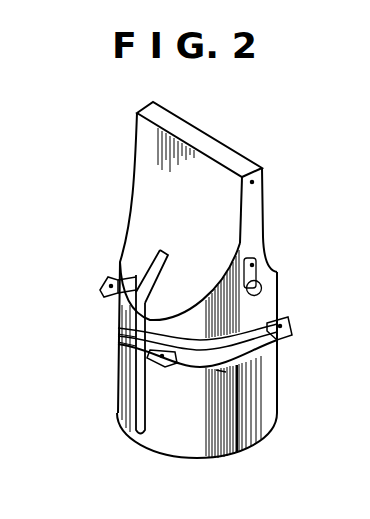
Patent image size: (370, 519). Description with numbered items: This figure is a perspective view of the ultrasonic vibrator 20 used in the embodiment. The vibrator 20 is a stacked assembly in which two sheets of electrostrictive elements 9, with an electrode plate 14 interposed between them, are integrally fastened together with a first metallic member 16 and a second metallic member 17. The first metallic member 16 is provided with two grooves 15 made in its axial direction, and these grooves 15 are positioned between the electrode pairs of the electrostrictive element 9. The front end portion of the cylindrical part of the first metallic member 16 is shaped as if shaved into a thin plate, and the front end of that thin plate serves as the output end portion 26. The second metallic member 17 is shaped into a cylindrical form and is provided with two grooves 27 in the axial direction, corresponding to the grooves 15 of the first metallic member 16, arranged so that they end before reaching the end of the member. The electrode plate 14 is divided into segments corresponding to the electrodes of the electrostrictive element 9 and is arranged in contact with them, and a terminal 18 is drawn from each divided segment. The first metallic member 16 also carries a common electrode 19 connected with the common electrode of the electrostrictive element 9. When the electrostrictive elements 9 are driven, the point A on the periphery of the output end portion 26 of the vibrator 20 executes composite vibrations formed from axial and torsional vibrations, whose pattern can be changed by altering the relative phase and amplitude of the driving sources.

The ultrasonic vibrator 20 is at (142, 138).
The output end portion 26 is at (212, 137).
The first metallic member 16 is at (253, 207).
The point on the periphery of the output end portion A is at (268, 178).
The second metallic member 17 is at (258, 405).
The electrode plate 14 is at (245, 372).
The electrostrictive element 9 is at (122, 340).
The grooves 15 is at (148, 268).
The grooves 27 is at (138, 395).
The common electrode 19 is at (257, 268).
The terminal 18 is at (108, 281).